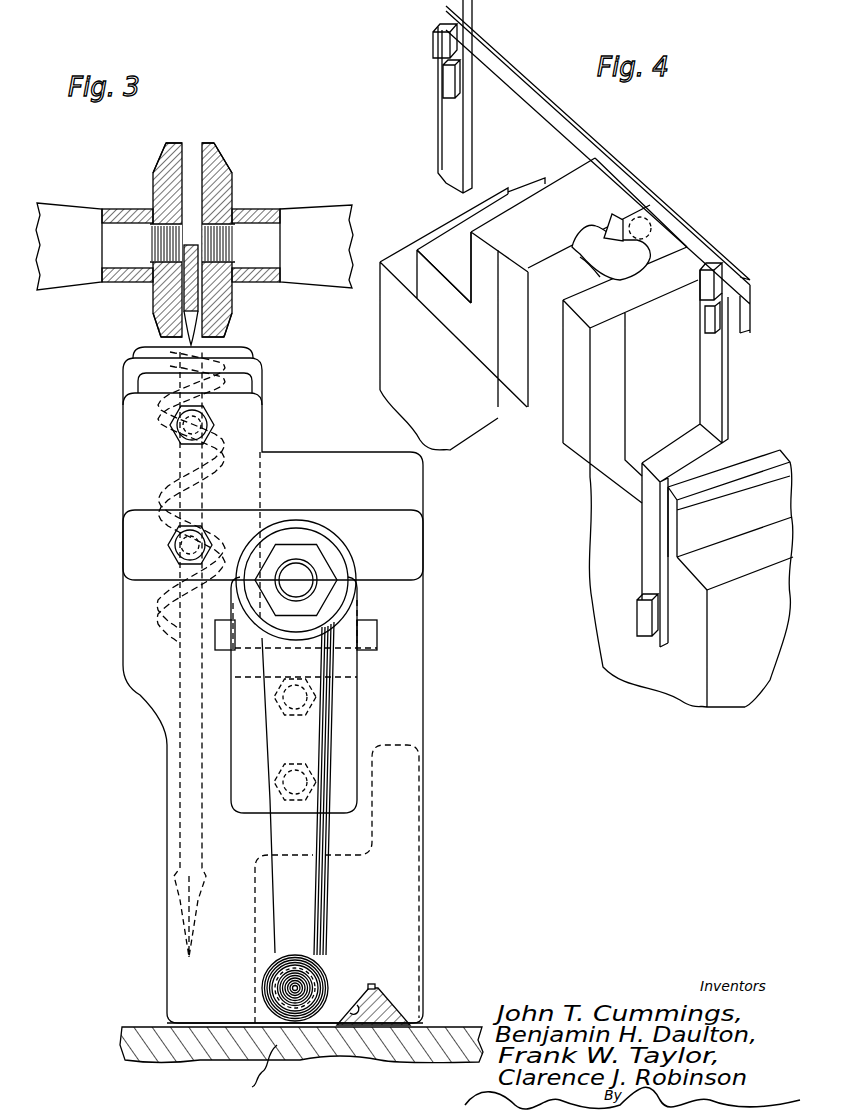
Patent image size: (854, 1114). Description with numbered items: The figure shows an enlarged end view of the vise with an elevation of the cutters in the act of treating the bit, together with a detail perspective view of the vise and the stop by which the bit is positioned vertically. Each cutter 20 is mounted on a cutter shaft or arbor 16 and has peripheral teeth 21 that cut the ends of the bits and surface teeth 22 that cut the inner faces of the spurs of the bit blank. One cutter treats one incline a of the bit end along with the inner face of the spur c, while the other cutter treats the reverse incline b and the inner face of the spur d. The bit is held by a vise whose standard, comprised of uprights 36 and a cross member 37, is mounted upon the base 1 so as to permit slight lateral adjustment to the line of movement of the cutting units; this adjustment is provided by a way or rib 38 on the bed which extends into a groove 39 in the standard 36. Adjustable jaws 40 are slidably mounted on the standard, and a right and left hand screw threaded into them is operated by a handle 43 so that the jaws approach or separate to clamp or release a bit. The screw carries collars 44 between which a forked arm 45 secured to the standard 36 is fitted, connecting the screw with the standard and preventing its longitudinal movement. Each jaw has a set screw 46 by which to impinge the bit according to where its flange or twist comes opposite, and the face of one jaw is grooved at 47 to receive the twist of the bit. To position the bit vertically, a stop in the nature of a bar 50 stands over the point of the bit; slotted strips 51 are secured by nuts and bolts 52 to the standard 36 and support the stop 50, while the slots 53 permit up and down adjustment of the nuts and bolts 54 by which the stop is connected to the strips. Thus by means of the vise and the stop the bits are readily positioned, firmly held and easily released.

In FIG. 3, the base 1 is at (138, 1040).
In FIG. 3, the cutter shaft or arbor 16 is at (60, 227).
In FIG. 3, the cutter 20 is at (153, 185).
In FIG. 3, the peripheral teeth 21 is at (166, 143).
In FIG. 3, the surface teeth 22 is at (162, 160).
In FIG. 3, the uprights 36 is at (385, 895).
In FIG. 4, the uprights 36 is at (470, 413).
In FIG. 3, the cross member 37 is at (412, 780).
In FIG. 3, the way or rib 38 is at (357, 1006).
In FIG. 3, the groove 39 is at (403, 973).
In FIG. 3, the adjustable jaws 40 is at (250, 440).
In FIG. 4, the adjustable jaws 40 is at (647, 428).
In FIG. 3, the handle 43 is at (308, 735).
In FIG. 3, the collars 44 is at (300, 521).
In FIG. 3, the forked arm 45 is at (347, 700).
In FIG. 3, the set screw 46 is at (170, 428).
In FIG. 4, the groove 47 is at (578, 242).
In FIG. 3, the bar (stop) 50 is at (192, 245).
In FIG. 4, the bar (stop) 50 is at (583, 148).
In FIG. 4, the slotted strips 51 is at (742, 398).
In FIG. 4, the nuts and bolts 52 is at (638, 615).
In FIG. 4, the slots 53 is at (442, 85).
In FIG. 4, the nuts and bolts 54 is at (433, 42).
In FIG. 3, the incline a is at (173, 342).
In FIG. 3, the reverse incline b is at (210, 343).
In FIG. 3, the spur c is at (158, 325).
In FIG. 4, the spur c is at (593, 232).
In FIG. 3, the spur d is at (225, 327).
In FIG. 4, the spur d is at (651, 222).